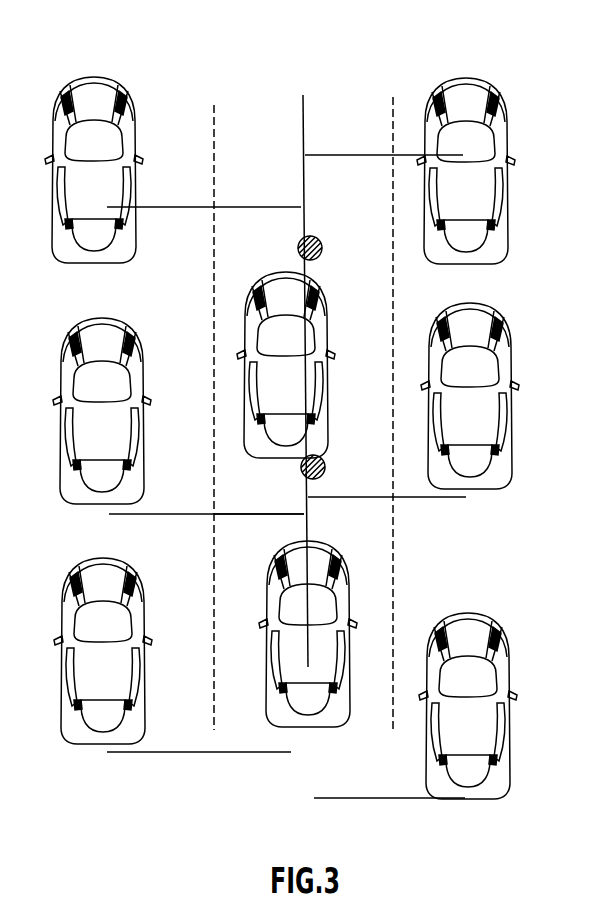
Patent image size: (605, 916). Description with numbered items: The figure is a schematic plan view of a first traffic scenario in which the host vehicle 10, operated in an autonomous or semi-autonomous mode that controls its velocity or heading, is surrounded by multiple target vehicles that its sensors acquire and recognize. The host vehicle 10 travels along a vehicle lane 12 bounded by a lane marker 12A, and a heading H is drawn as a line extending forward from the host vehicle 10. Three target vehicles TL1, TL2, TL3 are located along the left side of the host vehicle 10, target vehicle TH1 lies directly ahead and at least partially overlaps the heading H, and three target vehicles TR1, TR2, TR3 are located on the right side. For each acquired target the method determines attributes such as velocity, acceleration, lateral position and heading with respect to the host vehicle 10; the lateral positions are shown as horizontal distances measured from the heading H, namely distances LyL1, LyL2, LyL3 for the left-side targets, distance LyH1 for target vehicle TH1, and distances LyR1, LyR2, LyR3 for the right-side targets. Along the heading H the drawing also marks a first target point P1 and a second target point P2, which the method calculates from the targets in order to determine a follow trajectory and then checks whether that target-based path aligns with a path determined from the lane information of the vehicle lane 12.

The host vehicle 10 is at (310, 730).
The vehicle lane 12 is at (349, 122).
The lane marker 12A is at (394, 100).
The heading H is at (303, 118).
The first target point P1 is at (330, 467).
The second target point P2 is at (331, 250).
The target vehicle TL1 is at (103, 651).
The target vehicle TL2 is at (102, 411).
The target vehicle TL3 is at (94, 170).
The target vehicle TH1 is at (286, 365).
The target vehicle TR1 is at (468, 706).
The target vehicle TR2 is at (470, 396).
The target vehicle TR3 is at (466, 171).
The distance LyL1 is at (199, 729).
The distance LyL2 is at (206, 491).
The distance LyL3 is at (204, 188).
The distance LyH1 is at (259, 495).
The distance LyR1 is at (389, 821).
The distance LyR2 is at (387, 521).
The distance LyR3 is at (384, 183).